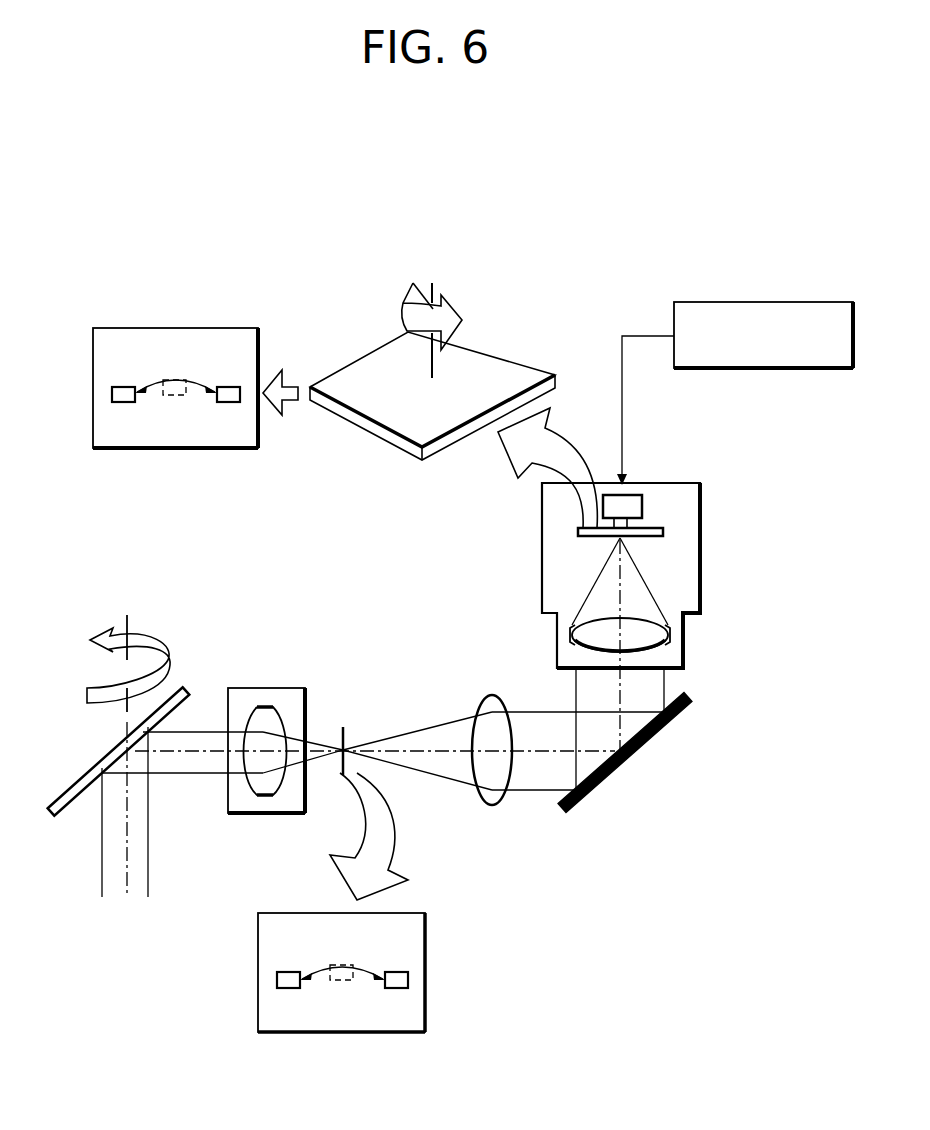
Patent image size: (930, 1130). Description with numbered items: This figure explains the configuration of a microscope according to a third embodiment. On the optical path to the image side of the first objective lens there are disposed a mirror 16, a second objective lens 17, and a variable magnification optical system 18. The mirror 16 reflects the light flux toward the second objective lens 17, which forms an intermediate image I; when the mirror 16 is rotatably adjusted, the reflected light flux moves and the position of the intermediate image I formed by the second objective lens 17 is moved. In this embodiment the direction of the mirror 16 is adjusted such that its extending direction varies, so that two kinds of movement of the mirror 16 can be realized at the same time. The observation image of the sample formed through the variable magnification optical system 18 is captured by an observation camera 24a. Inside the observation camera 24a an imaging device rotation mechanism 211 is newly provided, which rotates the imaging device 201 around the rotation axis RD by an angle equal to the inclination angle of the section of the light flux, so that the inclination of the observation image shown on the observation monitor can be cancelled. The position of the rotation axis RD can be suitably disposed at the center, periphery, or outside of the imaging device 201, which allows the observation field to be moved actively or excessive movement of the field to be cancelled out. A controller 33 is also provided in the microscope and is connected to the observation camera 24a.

The imaging device 201 is at (370, 377).
The imaging device rotation mechanism 211 is at (635, 507).
The observation camera 24a is at (700, 547).
The controller 33 is at (797, 302).
The mirror 16 is at (57, 790).
The second objective lens 17 is at (263, 713).
The variable magnification optical system 18 is at (495, 798).
The intermediate image I is at (352, 720).
The rotation axis RD is at (429, 278).